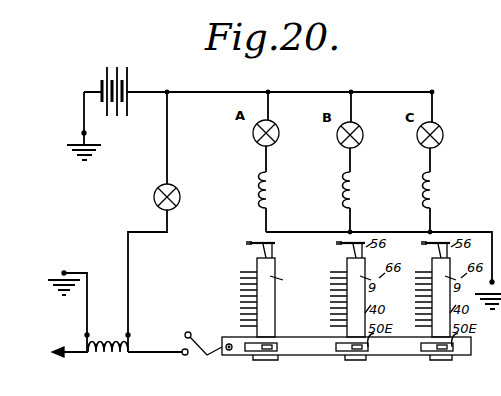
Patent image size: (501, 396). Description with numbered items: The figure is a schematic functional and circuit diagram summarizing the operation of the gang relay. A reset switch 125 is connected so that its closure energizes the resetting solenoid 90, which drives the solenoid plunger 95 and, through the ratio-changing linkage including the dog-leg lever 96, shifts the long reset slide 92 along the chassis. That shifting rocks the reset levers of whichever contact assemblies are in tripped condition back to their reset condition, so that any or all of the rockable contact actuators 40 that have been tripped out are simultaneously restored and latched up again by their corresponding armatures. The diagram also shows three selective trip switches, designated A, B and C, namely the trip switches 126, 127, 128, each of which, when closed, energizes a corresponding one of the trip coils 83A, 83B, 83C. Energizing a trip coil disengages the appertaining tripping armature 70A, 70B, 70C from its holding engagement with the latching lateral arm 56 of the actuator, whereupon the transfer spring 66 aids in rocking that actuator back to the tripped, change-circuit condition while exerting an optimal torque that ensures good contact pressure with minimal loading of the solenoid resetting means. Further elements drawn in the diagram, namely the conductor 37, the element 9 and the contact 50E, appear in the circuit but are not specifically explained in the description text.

The reset switch 125 is at (180, 198).
The selective trip switch 126 is at (277, 141).
The selective trip switch 127 is at (361, 143).
The selective trip switch 128 is at (441, 143).
The electromagnetic trip coil means 83A is at (270, 187).
The trip coil 83B is at (354, 187).
The trip coil 83C is at (434, 187).
The conductor 37 is at (383, 242).
The lateral arm 56 is at (276, 247).
The tripping armature 70A is at (233, 246).
The tripping armature 70B is at (321, 248).
The tripping armature 70C is at (406, 248).
The rockable contact actuator 40 is at (283, 305).
The transfer spring 66 is at (292, 279).
The lead 9 is at (285, 287).
The contact 50E is at (277, 347).
The reset slide 92 is at (322, 355).
The dog-leg lever 96 is at (205, 358).
The plunger 95 is at (157, 353).
The solenoid 90 is at (108, 356).